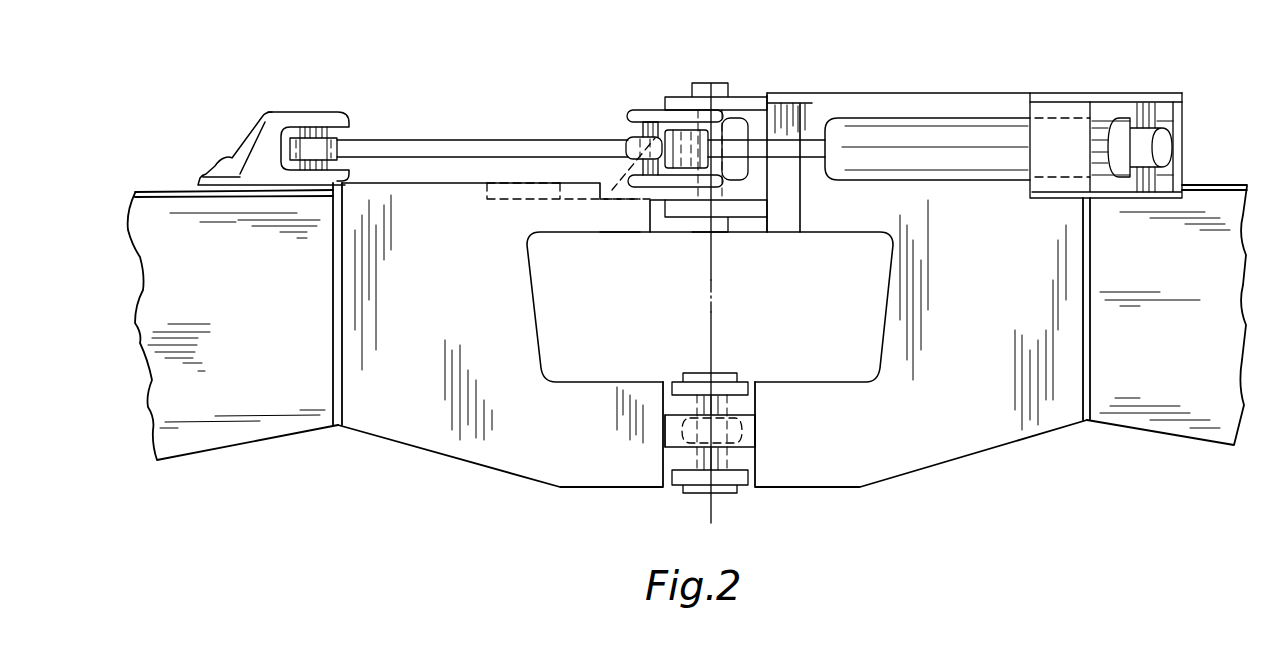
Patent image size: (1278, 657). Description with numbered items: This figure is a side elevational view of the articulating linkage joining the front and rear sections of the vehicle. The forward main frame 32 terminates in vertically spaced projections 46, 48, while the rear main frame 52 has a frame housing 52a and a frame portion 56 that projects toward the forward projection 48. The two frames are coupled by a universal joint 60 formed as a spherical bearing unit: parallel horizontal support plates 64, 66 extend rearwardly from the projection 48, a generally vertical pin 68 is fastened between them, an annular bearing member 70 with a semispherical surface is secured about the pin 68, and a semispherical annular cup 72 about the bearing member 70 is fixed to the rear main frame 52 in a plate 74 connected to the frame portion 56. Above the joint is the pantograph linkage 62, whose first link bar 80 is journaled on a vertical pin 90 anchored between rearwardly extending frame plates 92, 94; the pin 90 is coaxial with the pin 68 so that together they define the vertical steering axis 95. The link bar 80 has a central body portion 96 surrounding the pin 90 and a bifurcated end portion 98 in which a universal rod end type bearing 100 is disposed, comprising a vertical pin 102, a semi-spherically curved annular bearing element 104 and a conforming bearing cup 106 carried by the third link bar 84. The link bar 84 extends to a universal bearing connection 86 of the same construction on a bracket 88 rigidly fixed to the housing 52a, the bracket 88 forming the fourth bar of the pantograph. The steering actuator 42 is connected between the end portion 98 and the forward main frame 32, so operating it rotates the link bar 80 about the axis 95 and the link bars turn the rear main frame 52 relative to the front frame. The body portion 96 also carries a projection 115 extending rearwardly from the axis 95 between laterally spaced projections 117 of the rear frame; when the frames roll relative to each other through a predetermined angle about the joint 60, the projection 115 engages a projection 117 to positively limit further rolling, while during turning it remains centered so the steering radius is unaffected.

The forward main frame 32 is at (985, 460).
The steering actuator 42 is at (905, 137).
The frame projection 46 is at (833, 213).
The forward main frame projection 48 is at (818, 468).
The rear main frame 52 is at (303, 445).
The frame housing 52a is at (176, 420).
The frame portion 56 is at (592, 450).
The universal joint 60 is at (719, 425).
The pantograph linkage 62 is at (660, 84).
The support plate 64 is at (705, 385).
The support plate 66 is at (705, 488).
The pin 68 is at (722, 402).
The annular bearing member 70 is at (755, 428).
The semispherical annular cup 72 is at (760, 441).
The plate 74 is at (668, 437).
The first link bar 80 is at (656, 170).
The third link bar 84 is at (436, 140).
The universal bearing connection 86 is at (318, 150).
The bracket 88 is at (245, 148).
The vertical pin 90 is at (718, 107).
The frame plate 92 is at (673, 102).
The frame plate 94 is at (672, 228).
The vertical axis 95 is at (714, 298).
The central body portion 96 is at (740, 130).
The bifurcated end portion 98 is at (640, 116).
The universal rod end type bearing 100 is at (648, 168).
The pin 102 is at (640, 133).
The semi-spherically curved annular bearing element 104 is at (628, 163).
The bearing cup 106 is at (657, 205).
The projection 115 is at (606, 163).
The frame projection 117 is at (611, 237).